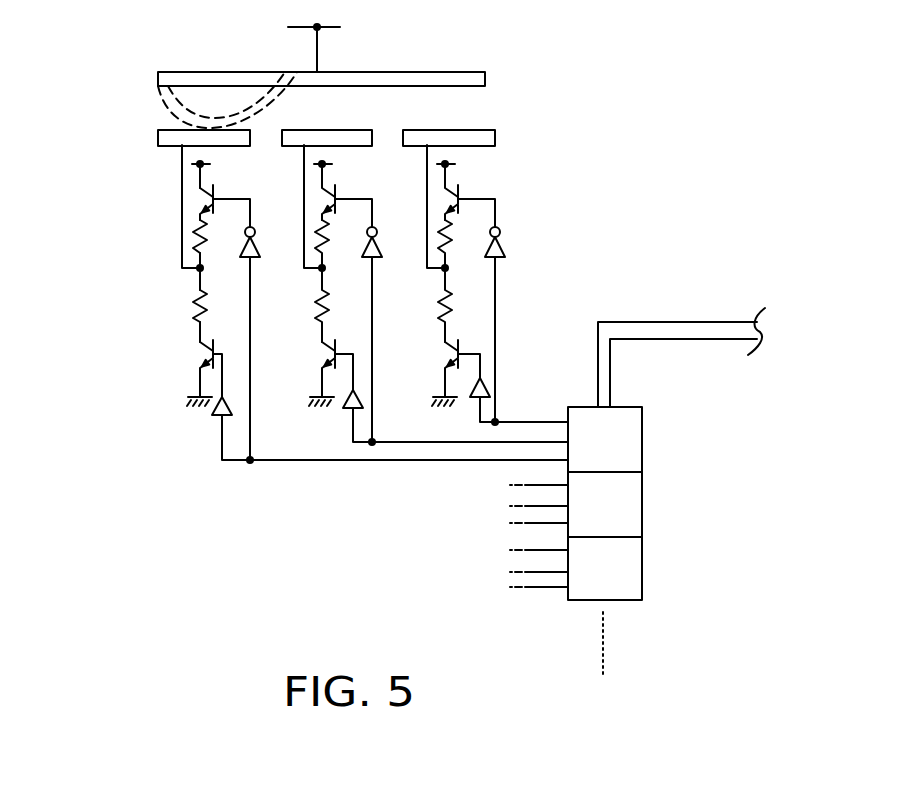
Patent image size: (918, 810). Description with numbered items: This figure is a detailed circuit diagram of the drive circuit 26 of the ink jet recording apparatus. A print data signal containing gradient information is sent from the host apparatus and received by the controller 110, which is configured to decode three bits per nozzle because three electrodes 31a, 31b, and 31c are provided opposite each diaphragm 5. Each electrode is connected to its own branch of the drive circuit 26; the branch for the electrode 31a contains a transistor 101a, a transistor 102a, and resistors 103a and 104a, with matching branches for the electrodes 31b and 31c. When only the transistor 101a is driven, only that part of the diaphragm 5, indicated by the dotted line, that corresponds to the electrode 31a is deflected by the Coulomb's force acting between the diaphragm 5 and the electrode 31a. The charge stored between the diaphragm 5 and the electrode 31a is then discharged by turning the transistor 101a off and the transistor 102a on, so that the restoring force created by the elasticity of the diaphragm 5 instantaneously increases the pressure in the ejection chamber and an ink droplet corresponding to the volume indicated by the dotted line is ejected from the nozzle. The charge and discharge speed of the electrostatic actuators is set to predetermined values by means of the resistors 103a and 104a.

The diaphragm 5 is at (487, 72).
The drive circuit 26 is at (64, 618).
The electrode 31a is at (158, 143).
The electrode 31b is at (357, 133).
The electrode 31c is at (488, 135).
The transistor 101a is at (182, 198).
The transistor 102a is at (192, 348).
The resistor 103a is at (182, 235).
The resistor 104a is at (182, 303).
The controller 110 is at (657, 593).